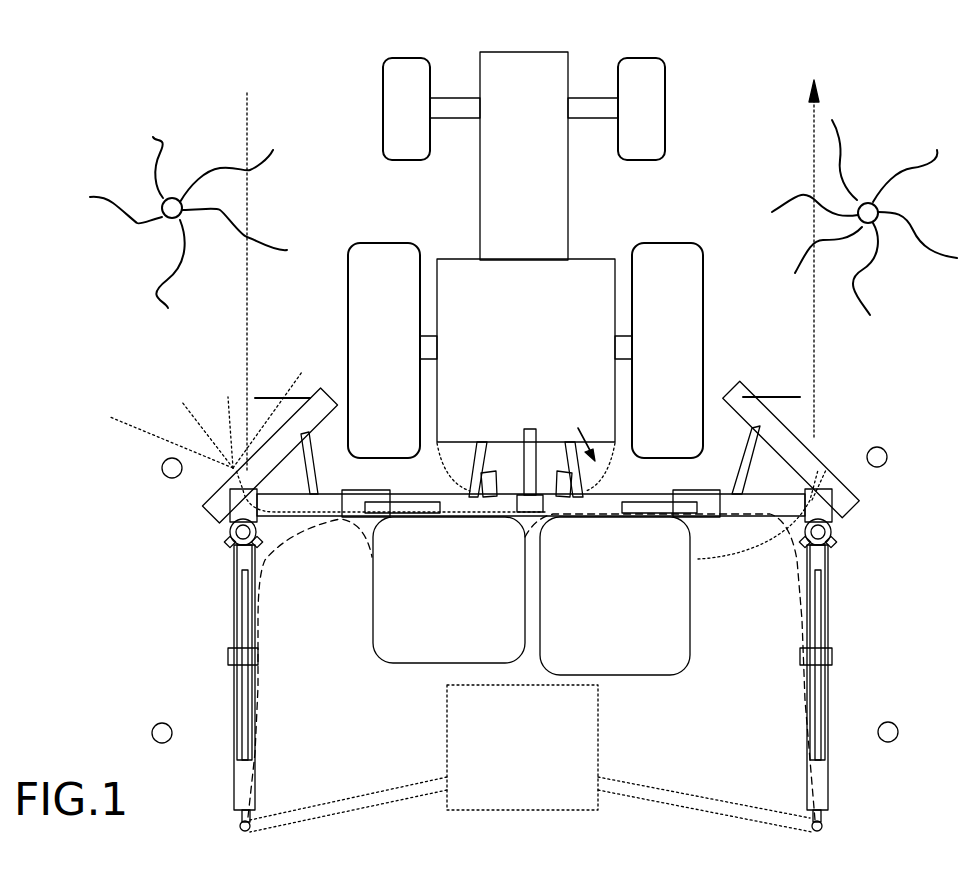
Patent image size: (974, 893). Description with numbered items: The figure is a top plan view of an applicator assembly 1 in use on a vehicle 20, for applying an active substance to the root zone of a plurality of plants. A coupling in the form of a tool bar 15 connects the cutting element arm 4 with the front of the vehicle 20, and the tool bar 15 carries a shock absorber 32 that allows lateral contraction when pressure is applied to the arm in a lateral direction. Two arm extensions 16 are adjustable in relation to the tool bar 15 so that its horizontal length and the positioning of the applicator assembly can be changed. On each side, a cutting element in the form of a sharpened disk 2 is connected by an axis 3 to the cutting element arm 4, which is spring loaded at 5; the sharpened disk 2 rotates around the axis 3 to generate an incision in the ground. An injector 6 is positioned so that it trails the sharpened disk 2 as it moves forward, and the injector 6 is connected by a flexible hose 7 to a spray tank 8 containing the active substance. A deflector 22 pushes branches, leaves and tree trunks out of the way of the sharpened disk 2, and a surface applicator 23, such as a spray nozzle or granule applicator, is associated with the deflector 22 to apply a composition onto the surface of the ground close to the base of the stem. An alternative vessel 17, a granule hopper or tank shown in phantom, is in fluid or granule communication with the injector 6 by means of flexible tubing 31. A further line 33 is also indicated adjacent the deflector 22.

The applicator assembly 1 is at (535, 677).
The sharpened disk 2 is at (247, 705).
The axis 3 is at (253, 657).
The cutting element arm 4 is at (243, 565).
The spring loading 5 is at (247, 553).
The injector 6 is at (240, 830).
The flexible hose 7 is at (260, 627).
The spray tank 8 is at (393, 647).
The tool bar 15 is at (600, 500).
The arm extensions 16 is at (753, 507).
The alternative vessel 17 is at (460, 720).
The vehicle 20 is at (552, 203).
The deflector 22 is at (776, 438).
The surface applicator 23 is at (232, 468).
The flexible tubing 31 is at (352, 806).
The shock absorber 32 is at (658, 504).
The reference line 33 is at (270, 397).